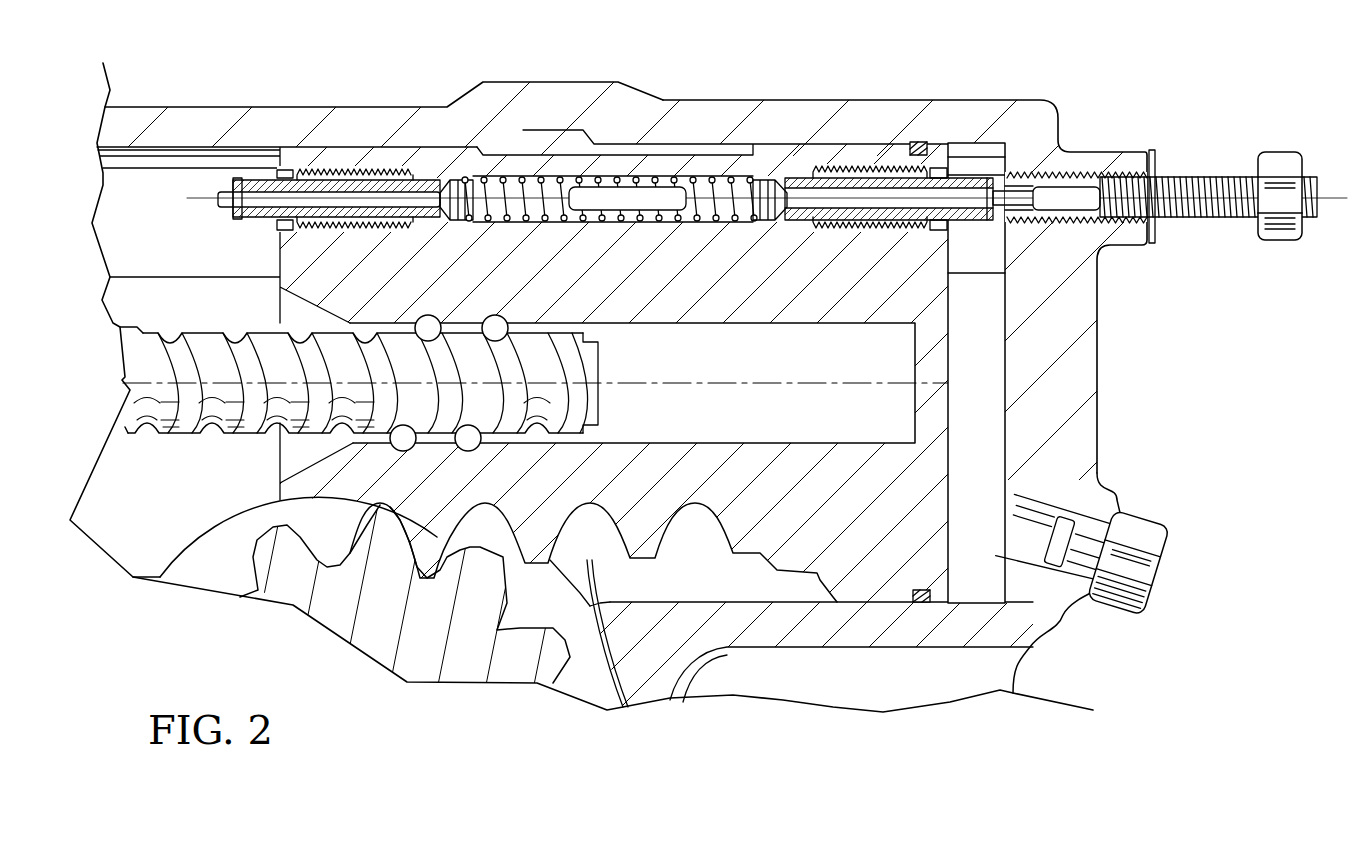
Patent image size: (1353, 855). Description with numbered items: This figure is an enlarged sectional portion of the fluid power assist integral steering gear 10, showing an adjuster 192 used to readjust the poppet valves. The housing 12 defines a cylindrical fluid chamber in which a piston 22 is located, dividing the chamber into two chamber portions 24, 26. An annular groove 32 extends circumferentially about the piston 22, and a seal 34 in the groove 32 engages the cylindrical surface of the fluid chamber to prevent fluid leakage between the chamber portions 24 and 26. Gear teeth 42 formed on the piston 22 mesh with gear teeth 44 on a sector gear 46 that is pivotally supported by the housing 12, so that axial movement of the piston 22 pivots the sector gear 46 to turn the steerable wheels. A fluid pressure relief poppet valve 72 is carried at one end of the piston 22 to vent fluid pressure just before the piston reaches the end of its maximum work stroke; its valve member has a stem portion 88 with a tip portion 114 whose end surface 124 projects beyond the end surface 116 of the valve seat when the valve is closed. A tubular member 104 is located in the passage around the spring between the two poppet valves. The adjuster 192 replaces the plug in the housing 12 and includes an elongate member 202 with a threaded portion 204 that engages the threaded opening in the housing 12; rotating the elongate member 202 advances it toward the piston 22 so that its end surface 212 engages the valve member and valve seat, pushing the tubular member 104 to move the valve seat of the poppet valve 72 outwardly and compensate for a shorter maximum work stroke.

The fluid power assist integral steering gear 10 is at (1150, 88).
The housing 12 is at (1070, 340).
The piston 22 is at (933, 490).
The chamber portion 24 is at (204, 491).
The chamber portion 26 is at (1002, 446).
The annular groove 32 is at (932, 598).
The seal 34 is at (920, 143).
The gear teeth 42 is at (330, 533).
The gear teeth 44 is at (378, 543).
The sector gear 46 is at (478, 578).
The poppet valve 72 is at (430, 162).
The stem portion 88 is at (967, 192).
The tubular member 104 is at (628, 176).
The tip portion 114 is at (1007, 193).
The end surface 116 is at (1003, 212).
The end surface 124 is at (1060, 148).
The adjuster 192 is at (1273, 148).
The elongate member 202 is at (1210, 168).
The threaded portion 204 is at (1207, 200).
The end surface 212 is at (1032, 212).